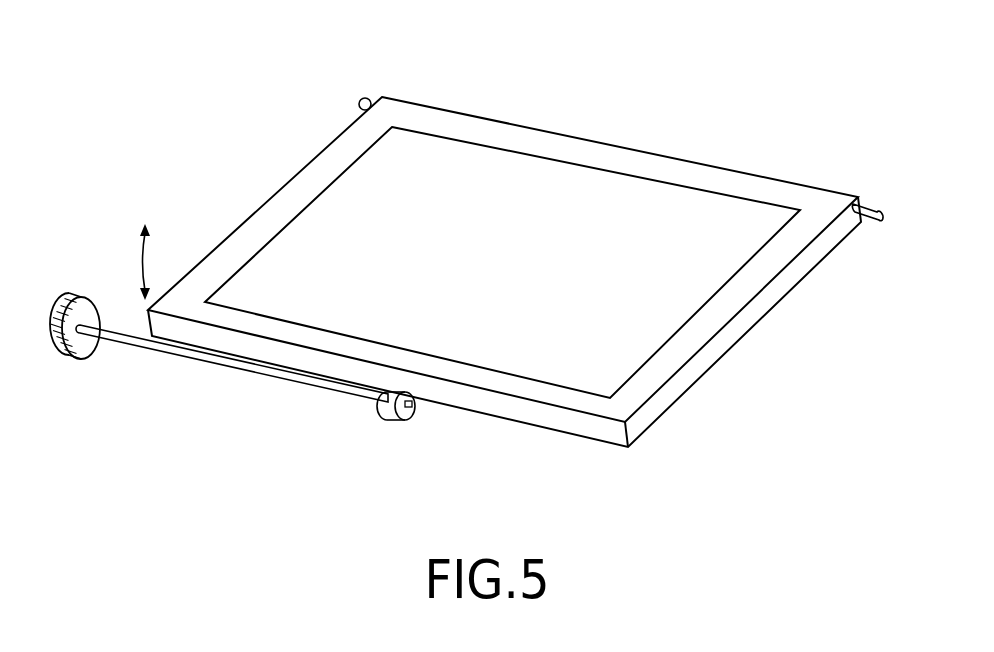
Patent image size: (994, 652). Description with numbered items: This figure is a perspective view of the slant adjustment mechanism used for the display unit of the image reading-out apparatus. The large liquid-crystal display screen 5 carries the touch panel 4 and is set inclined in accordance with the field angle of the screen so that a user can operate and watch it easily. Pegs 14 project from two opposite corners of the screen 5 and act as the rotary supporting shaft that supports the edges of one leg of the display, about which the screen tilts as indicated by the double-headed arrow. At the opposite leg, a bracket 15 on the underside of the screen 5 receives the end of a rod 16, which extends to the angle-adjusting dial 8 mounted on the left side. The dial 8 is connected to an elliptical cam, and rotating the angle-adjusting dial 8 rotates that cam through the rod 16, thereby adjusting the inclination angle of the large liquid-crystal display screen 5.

The touch panel 4 is at (685, 167).
The large liquid-crystal display screen 5 is at (587, 200).
The angle-adjusting dial 8 is at (66, 297).
The pivot peg 14 is at (362, 99).
The bracket 15 is at (390, 407).
The rod 16 is at (118, 345).